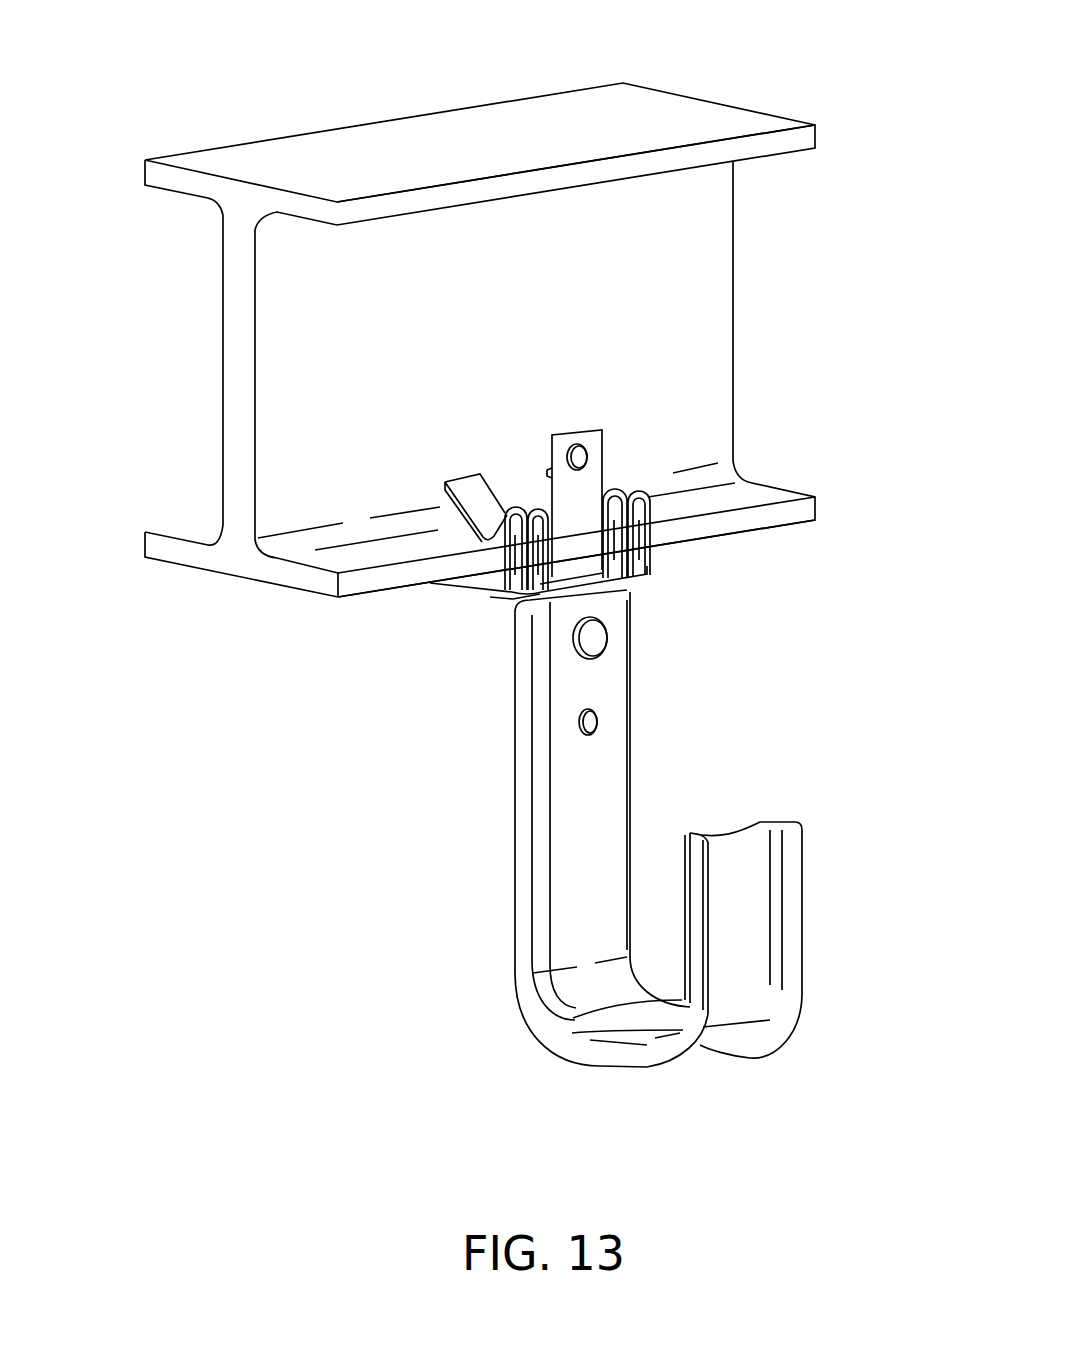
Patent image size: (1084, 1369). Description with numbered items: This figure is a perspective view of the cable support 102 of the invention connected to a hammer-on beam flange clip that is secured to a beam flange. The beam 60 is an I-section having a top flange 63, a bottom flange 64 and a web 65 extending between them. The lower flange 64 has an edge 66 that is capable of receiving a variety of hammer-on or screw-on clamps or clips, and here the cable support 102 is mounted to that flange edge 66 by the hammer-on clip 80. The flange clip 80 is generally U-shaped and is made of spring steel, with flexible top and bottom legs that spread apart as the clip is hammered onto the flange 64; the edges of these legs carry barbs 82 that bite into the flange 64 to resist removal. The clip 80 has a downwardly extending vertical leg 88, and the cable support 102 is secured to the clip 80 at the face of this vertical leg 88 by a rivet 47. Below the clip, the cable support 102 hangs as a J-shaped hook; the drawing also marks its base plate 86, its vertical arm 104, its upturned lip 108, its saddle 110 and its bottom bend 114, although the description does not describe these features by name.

The I-beam 60 is at (474, 353).
The top flange 63 is at (765, 127).
The bottom flange 64 is at (330, 558).
The web 65 is at (280, 390).
The edge 66 is at (377, 593).
The hammer-on clip 80 is at (599, 544).
The barbs 82 is at (467, 492).
The base plate 86 is at (462, 593).
The vertical leg 88 is at (627, 591).
The rivet 47 is at (590, 640).
The cable support 102 is at (614, 873).
The vertical arm 104 is at (652, 805).
The lip 108 is at (823, 855).
The saddle 110 is at (627, 1007).
The bottom bend 114 is at (657, 1053).